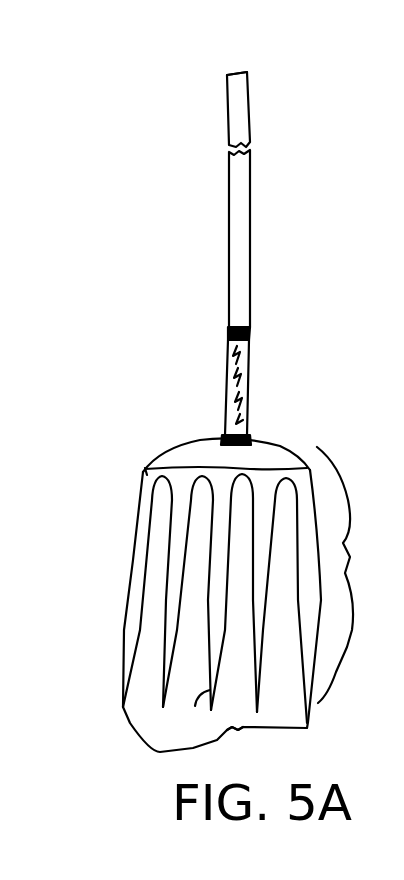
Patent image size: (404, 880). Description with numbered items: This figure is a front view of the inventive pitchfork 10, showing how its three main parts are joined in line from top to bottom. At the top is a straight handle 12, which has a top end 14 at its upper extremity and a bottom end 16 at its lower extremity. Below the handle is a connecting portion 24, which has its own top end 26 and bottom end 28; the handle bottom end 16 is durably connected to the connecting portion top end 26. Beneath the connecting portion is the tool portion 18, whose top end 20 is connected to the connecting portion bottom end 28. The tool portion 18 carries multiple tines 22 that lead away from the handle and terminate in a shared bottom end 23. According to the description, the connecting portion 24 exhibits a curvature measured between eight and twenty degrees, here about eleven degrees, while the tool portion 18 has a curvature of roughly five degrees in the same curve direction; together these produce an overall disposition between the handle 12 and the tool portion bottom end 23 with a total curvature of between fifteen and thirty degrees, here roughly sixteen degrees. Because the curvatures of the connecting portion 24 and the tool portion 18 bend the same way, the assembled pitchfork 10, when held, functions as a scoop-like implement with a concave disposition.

The pitchfork 10 is at (148, 197).
The straight handle 12 is at (250, 210).
The top end 14 is at (238, 74).
The bottom end 16 is at (249, 318).
The tool portion 18 is at (263, 599).
The top end 20 is at (207, 438).
The tines 22 is at (127, 578).
The bottom end 23 is at (241, 745).
The connecting portion 24 is at (248, 378).
The top end 26 is at (249, 337).
The bottom end 28 is at (252, 437).